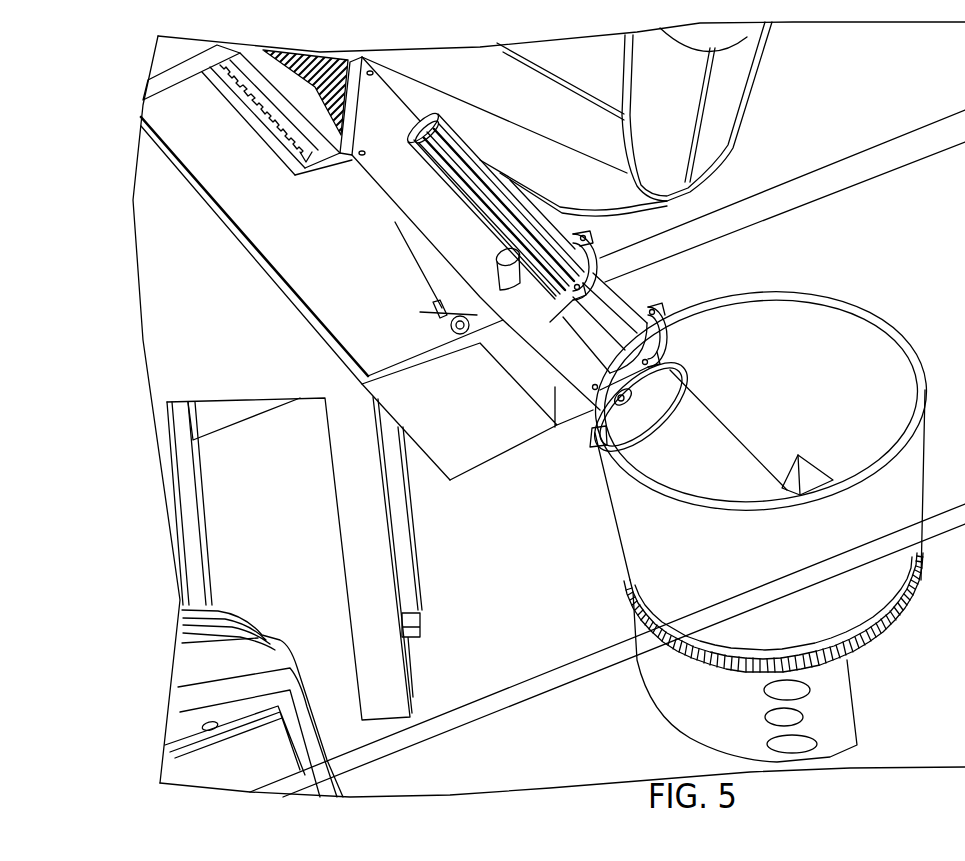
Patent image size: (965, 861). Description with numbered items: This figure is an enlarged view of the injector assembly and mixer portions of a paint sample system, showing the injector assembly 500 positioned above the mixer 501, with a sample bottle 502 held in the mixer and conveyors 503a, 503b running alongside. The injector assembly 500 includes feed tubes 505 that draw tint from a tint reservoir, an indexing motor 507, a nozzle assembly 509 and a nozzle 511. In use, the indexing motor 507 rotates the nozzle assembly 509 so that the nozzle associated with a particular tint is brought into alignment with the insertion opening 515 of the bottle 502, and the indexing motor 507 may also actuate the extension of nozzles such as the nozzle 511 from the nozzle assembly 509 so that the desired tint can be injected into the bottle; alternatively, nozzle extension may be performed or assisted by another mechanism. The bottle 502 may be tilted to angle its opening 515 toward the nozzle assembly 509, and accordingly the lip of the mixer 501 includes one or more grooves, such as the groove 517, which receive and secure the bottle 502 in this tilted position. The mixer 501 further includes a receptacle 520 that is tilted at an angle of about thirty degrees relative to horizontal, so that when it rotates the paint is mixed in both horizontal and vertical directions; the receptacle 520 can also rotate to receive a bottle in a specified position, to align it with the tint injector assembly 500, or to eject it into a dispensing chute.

The injector assembly 500 is at (617, 263).
The mixer 501 is at (796, 560).
The sample bottle 502 is at (701, 473).
The conveyor 503a is at (545, 163).
The conveyor 503b is at (689, 101).
The feed tubes 505 is at (452, 177).
The indexing motor 507 is at (522, 280).
The nozzle assembly 509 is at (622, 297).
The nozzle 511 is at (553, 421).
The insertion opening 515 is at (662, 390).
The groove 517 is at (593, 437).
The receptacle 520 is at (785, 468).